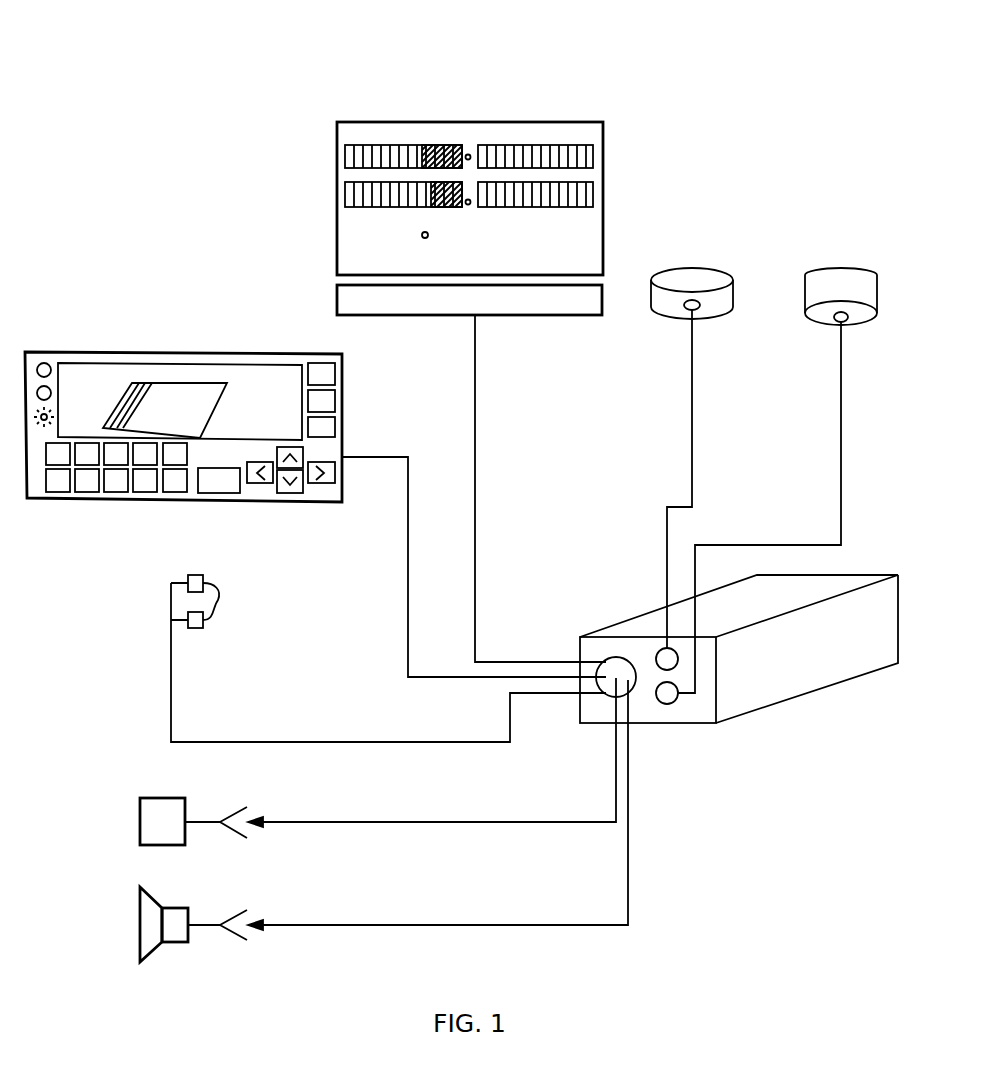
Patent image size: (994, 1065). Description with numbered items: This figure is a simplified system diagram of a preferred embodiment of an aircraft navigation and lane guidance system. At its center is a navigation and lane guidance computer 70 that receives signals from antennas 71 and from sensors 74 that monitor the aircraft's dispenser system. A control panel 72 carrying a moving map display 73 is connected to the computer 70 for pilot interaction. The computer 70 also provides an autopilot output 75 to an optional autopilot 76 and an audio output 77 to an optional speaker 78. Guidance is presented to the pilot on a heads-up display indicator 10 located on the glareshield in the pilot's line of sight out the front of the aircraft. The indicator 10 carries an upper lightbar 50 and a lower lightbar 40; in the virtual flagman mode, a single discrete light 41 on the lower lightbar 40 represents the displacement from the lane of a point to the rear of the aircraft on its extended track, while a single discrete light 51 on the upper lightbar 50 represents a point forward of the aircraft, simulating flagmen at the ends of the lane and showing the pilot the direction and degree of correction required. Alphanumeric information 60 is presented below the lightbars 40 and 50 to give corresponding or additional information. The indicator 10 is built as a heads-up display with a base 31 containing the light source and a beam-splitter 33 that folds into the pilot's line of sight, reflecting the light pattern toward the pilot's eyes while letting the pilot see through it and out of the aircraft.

The heads-up display indicator 10 is at (290, 58).
The base 31 is at (337, 300).
The beam-splitter 33 is at (604, 255).
The lower lightbar 40 is at (425, 207).
The discrete light 41 is at (442, 205).
The upper lightbar 50 is at (438, 127).
The discrete light 51 is at (435, 145).
The alphanumeric information 60 is at (331, 227).
The navigation and lane guidance computer 70 is at (767, 712).
The antennas 71 is at (708, 322).
The control panel 72 is at (183, 429).
The moving map display 73 is at (145, 363).
The sensors 74 is at (220, 589).
The autopilot output 75 is at (372, 822).
The autopilot 76 is at (140, 807).
The audio output 77 is at (372, 925).
The speaker 78 is at (140, 890).